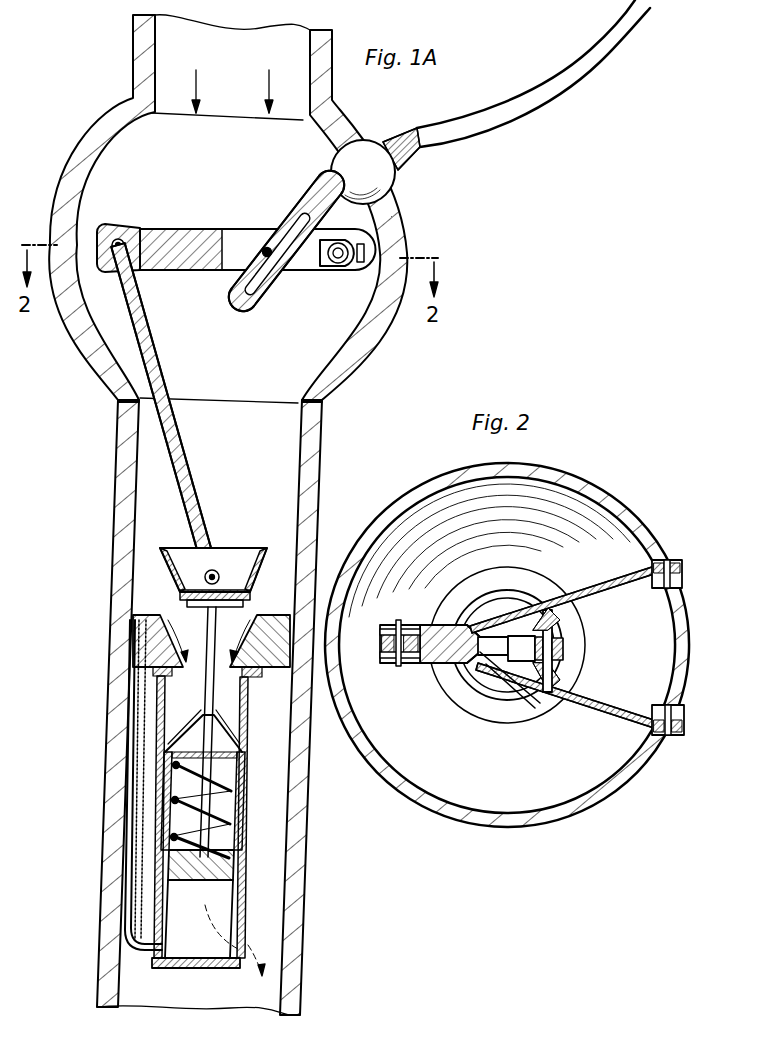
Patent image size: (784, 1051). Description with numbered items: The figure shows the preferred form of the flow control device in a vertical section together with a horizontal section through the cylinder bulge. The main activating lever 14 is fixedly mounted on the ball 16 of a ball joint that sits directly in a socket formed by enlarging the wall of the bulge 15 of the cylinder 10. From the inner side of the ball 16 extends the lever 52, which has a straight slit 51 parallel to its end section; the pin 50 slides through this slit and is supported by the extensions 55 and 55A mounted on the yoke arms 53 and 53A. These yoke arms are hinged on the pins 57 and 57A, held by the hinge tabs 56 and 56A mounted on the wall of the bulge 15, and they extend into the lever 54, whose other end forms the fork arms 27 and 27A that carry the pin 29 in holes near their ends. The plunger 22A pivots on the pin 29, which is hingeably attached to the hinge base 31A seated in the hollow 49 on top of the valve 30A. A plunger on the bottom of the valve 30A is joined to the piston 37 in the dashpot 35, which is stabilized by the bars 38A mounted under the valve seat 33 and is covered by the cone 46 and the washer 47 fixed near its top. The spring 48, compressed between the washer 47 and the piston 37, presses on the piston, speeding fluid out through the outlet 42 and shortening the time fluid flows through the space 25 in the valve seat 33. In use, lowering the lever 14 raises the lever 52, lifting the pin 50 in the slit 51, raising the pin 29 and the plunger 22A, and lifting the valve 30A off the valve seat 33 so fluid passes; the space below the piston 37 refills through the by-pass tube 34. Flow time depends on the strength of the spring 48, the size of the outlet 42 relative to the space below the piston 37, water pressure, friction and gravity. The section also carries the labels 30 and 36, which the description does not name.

In FIG. 1A, the cylinder 10 is at (296, 808).
In FIG. 1A, the main activating lever 14 is at (563, 85).
In FIG. 1A, the bulge 15 is at (378, 322).
In FIG. 2, the bulge 15 is at (604, 500).
In FIG. 1A, the ball 16 is at (385, 172).
In FIG. 1A, the plunger 22A is at (190, 462).
In FIG. 2, the plunger 22A is at (387, 663).
In FIG. 1A, the space 25 is at (182, 625).
In FIG. 1A, the fork arm 27 is at (100, 242).
In FIG. 2, the fork arm 27 is at (388, 624).
In FIG. 2, the fork arm 27A is at (408, 663).
In FIG. 1A, the pin 29 is at (123, 230).
In FIG. 2, the pin 29 is at (399, 666).
In FIG. 2, the hub 30 is at (510, 606).
In FIG. 1A, the valve 30A is at (252, 588).
In FIG. 1A, the hinge base 31A is at (190, 550).
In FIG. 1A, the valve seat 33 is at (130, 646).
In FIG. 1A, the by-pass tube 34 is at (133, 862).
In FIG. 1A, the dashpot 35 is at (240, 846).
In FIG. 1A, the bottom plate 36 is at (208, 968).
In FIG. 1A, the piston 37 is at (228, 878).
In FIG. 1A, the bars 38A is at (244, 724).
In FIG. 1A, the outlet 42 is at (235, 938).
In FIG. 1A, the cone 46 is at (148, 726).
In FIG. 1A, the washer 47 is at (238, 770).
In FIG. 1A, the spring 48 is at (185, 810).
In FIG. 1A, the hollow 49 is at (233, 552).
In FIG. 1A, the pin 50 is at (276, 272).
In FIG. 2, the pin 50 is at (545, 636).
In FIG. 1A, the slit 51 is at (256, 298).
In FIG. 2, the slit 51 is at (565, 648).
In FIG. 1A, the lever 52 is at (238, 292).
In FIG. 2, the lever 52 is at (525, 662).
In FIG. 1A, the yoke arm 53 is at (226, 242).
In FIG. 2, the yoke arm 53 is at (585, 602).
In FIG. 2, the yoke arm 53A is at (582, 700).
In FIG. 1A, the lever 54 is at (168, 252).
In FIG. 2, the lever 54 is at (448, 663).
In FIG. 2, the extension 55 is at (560, 622).
In FIG. 2, the extension 55A is at (560, 668).
In FIG. 1A, the hinge tab 56 is at (392, 249).
In FIG. 2, the hinge tab 56 is at (642, 566).
In FIG. 2, the hinge tab 56A is at (624, 728).
In FIG. 1A, the pin 57 is at (390, 232).
In FIG. 2, the pin 57 is at (648, 578).
In FIG. 2, the pin 57A is at (640, 724).